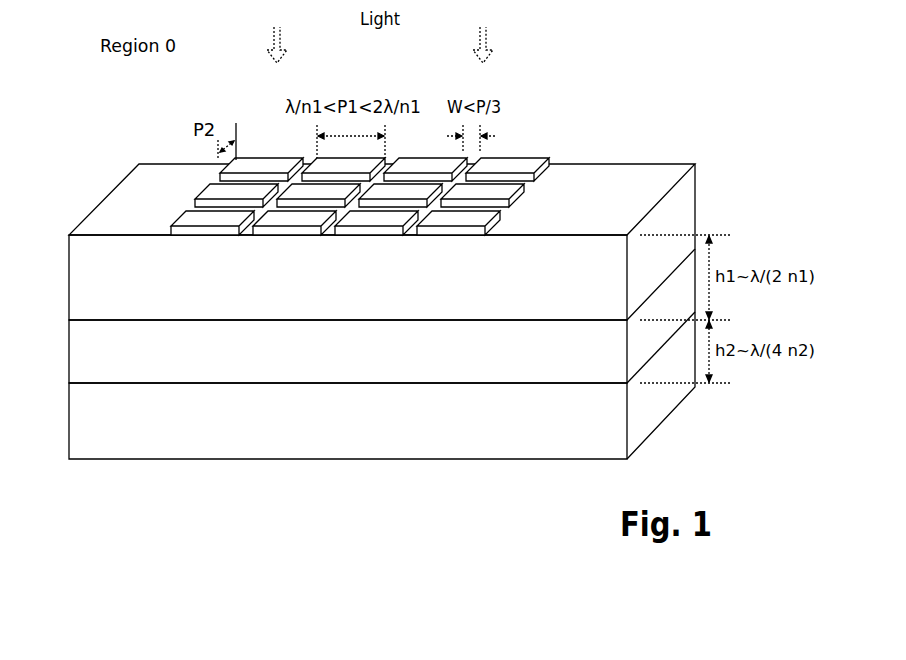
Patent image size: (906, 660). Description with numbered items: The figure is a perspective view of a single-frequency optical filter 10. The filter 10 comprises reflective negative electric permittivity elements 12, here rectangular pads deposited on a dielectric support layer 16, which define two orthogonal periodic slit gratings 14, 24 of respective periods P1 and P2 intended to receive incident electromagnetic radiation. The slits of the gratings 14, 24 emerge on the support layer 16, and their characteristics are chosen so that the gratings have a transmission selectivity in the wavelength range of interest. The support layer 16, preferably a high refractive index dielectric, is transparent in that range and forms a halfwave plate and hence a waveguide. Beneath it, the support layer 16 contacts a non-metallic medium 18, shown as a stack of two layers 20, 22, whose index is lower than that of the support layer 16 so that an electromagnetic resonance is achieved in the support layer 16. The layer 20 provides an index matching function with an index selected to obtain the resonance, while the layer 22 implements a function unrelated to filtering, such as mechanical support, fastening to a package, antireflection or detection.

The single-frequency optical filter 10 is at (658, 128).
The reflective negative electric permittivity elements 12 is at (274, 159).
The periodic slit grating 14 is at (503, 190).
The dielectric support layer 16 is at (678, 204).
The non-metallic medium 18 is at (55, 323).
The index matching layer 20 is at (645, 345).
The functionalized layer 22 is at (675, 396).
The periodic slit grating 24 is at (472, 172).